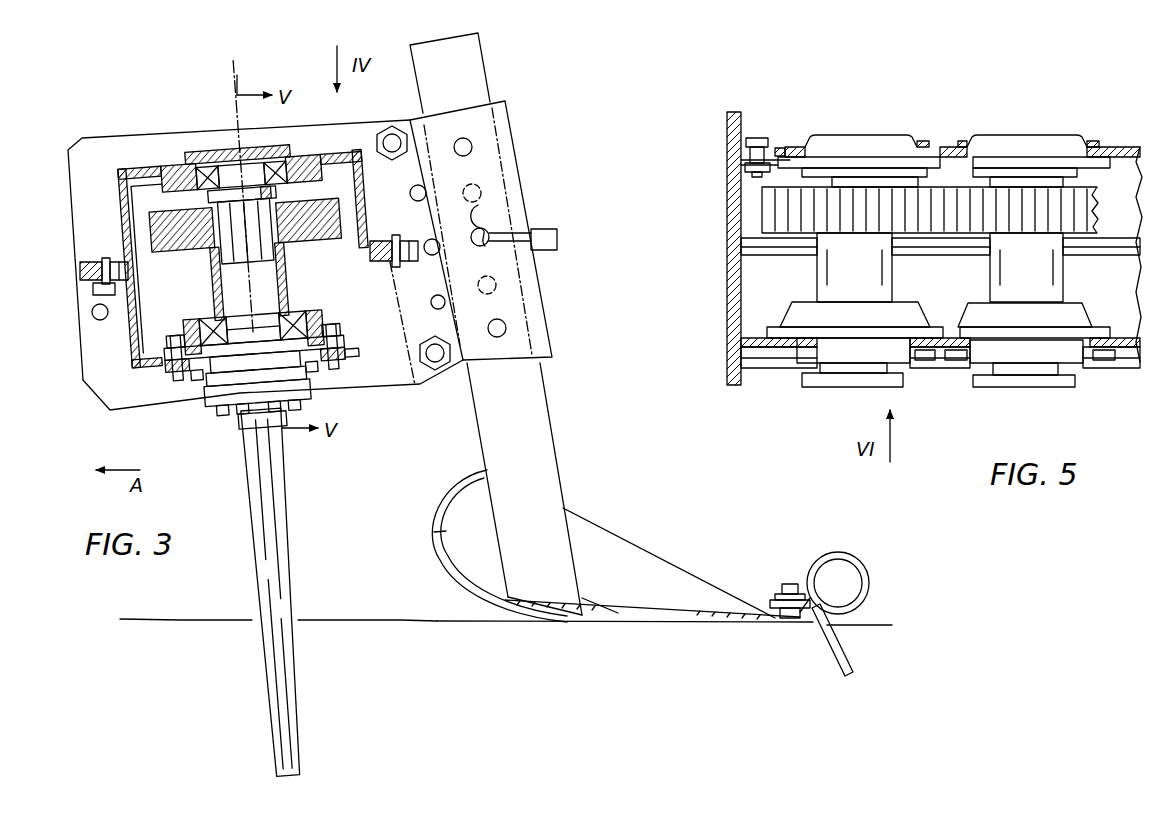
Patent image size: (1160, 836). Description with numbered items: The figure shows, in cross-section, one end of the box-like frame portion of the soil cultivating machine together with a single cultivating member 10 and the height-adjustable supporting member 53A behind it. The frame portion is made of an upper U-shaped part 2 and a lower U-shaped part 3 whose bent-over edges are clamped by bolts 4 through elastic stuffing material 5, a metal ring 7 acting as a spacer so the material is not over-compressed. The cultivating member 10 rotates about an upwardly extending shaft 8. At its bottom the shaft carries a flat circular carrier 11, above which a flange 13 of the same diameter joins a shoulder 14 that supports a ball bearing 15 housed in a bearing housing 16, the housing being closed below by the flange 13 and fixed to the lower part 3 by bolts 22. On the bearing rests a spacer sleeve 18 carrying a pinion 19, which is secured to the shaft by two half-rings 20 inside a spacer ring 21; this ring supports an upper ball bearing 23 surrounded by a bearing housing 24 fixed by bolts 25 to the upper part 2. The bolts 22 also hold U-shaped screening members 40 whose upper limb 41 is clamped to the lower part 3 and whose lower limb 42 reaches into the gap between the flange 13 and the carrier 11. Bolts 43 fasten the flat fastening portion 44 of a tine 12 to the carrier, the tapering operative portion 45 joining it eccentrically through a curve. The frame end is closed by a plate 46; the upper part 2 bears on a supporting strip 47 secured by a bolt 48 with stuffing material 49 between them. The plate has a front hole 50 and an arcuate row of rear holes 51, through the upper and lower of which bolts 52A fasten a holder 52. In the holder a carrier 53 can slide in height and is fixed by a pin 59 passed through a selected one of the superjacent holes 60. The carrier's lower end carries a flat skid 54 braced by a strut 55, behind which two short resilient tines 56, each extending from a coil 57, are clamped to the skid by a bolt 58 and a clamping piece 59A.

In FIG. 3, the upper U-shaped part 2 is at (120, 175).
In FIG. 5, the upper U-shaped part 2 is at (1133, 197).
In FIG. 3, the lower U-shaped part 3 is at (130, 326).
In FIG. 5, the lower U-shaped part 3 is at (1134, 290).
In FIG. 3, the bolt 4 is at (107, 256).
In FIG. 3, the elastic stuffing material 5 is at (129, 269).
In FIG. 5, the elastic stuffing material 5 is at (1095, 256).
In FIG. 3, the metal ring 7 is at (88, 279).
In FIG. 3, the shaft 8 is at (263, 300).
In FIG. 3, the cultivating member 10 is at (324, 465).
In FIG. 3, the carrier 11 is at (300, 386).
In FIG. 5, the carrier 11 is at (815, 387).
In FIG. 3, the tine 12 is at (292, 510).
In FIG. 3, the flange 13 is at (244, 361).
In FIG. 3, the shoulder 14 is at (243, 344).
In FIG. 3, the ball bearing 15 is at (300, 316).
In FIG. 5, the ball bearing 15 is at (802, 302).
In FIG. 3, the bearing housing 16 is at (322, 328).
In FIG. 5, the bearing housing 16 is at (912, 317).
In FIG. 3, the spacer sleeve 18 is at (216, 286).
In FIG. 5, the spacer sleeve 18 is at (895, 266).
In FIG. 3, the pinion 19 is at (312, 247).
In FIG. 5, the pinion 19 is at (950, 201).
In FIG. 3, the half-ring 20 is at (212, 195).
In FIG. 3, the spacer ring 21 is at (284, 197).
In FIG. 3, the bolt 22 is at (185, 398).
In FIG. 5, the bolt 22 is at (1098, 367).
In FIG. 3, the ball bearing 23 is at (216, 158).
In FIG. 3, the bearing housing 24 is at (205, 150).
In FIG. 5, the bearing housing 24 is at (880, 136).
In FIG. 3, the bolt 25 is at (178, 172).
In FIG. 5, the bolt 25 is at (922, 147).
In FIG. 3, the screening member 40 is at (152, 380).
In FIG. 5, the screening member 40 is at (920, 375).
In FIG. 3, the upper limb 41 is at (170, 352).
In FIG. 5, the upper limb 41 is at (950, 372).
In FIG. 3, the lower limb 42 is at (203, 415).
In FIG. 5, the lower limb 42 is at (762, 370).
In FIG. 3, the bolt 43 is at (235, 430).
In FIG. 3, the fastening portion 44 is at (300, 398).
In FIG. 3, the operative portion 45 is at (291, 689).
In FIG. 3, the plate 46 is at (239, 248).
In FIG. 5, the plate 46 is at (727, 300).
In FIG. 3, the supporting strip 47 is at (122, 205).
In FIG. 5, the supporting strip 47 is at (745, 162).
In FIG. 5, the bolt 48 is at (757, 138).
In FIG. 3, the stuffing material 49 is at (124, 223).
In FIG. 5, the stuffing material 49 is at (780, 148).
In FIG. 3, the hole 50 is at (93, 316).
In FIG. 3, the hole 51 is at (420, 201).
In FIG. 3, the holder 52 is at (512, 127).
In FIG. 3, the bolt 52A is at (393, 125).
In FIG. 3, the carrier 53 is at (548, 432).
In FIG. 3, the supporting member 53A is at (481, 452).
In FIG. 3, the skid 54 is at (592, 624).
In FIG. 3, the strut 55 is at (650, 557).
In FIG. 3, the tine 56 is at (830, 665).
In FIG. 3, the coil 57 is at (868, 579).
In FIG. 3, the bolt 58 is at (790, 590).
In FIG. 3, the pin 59 is at (560, 238).
In FIG. 3, the clamping piece 59A is at (778, 601).
In FIG. 3, the hole 60 is at (473, 150).